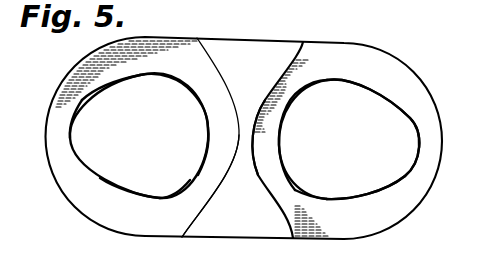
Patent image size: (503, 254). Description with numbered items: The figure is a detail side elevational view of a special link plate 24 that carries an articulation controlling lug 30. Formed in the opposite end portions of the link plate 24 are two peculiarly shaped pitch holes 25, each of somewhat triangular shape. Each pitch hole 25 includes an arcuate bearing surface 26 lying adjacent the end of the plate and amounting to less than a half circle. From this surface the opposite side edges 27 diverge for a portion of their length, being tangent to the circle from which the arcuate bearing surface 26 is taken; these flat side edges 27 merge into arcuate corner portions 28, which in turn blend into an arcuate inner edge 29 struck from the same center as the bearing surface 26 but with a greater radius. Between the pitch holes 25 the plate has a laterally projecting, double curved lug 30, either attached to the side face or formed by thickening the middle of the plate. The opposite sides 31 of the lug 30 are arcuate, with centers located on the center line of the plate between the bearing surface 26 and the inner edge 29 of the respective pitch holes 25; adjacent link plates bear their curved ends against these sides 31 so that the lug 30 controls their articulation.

The link plate 24 is at (432, 95).
The pitch hole 25 is at (141, 145).
The arcuate bearing surface 26 is at (71, 132).
The side edge 27 is at (128, 80).
The arcuate corner portion 28 is at (184, 76).
The arcuate inner edge 29 is at (207, 136).
The lug 30 is at (238, 54).
The side of lug 31 is at (270, 95).